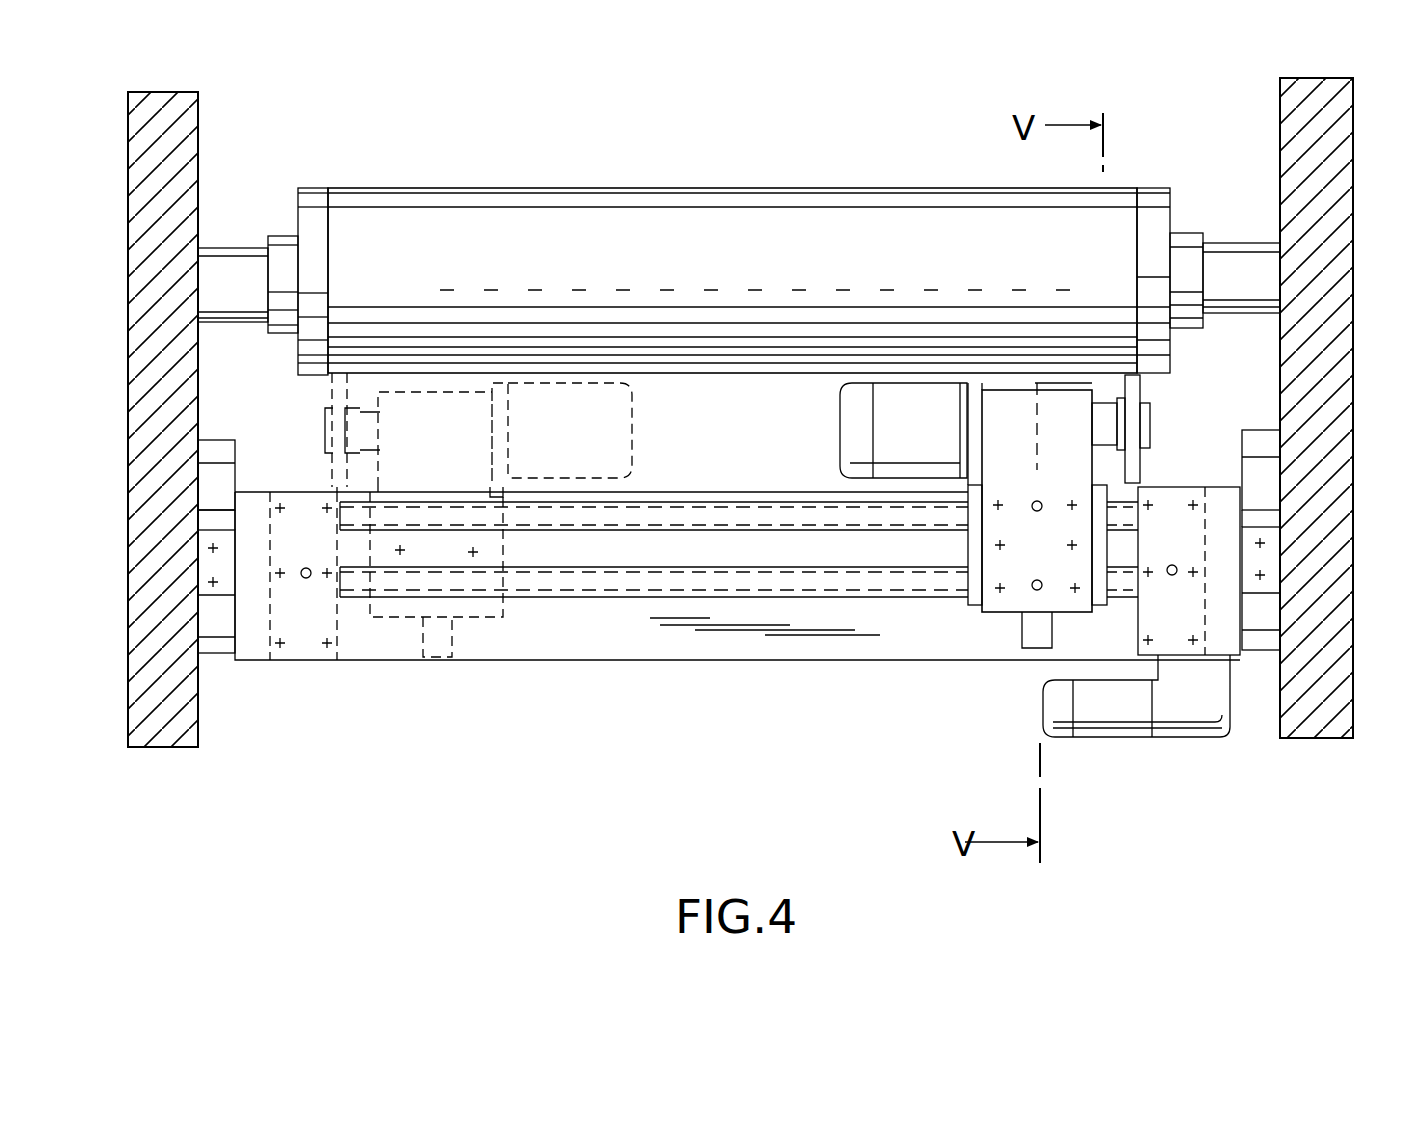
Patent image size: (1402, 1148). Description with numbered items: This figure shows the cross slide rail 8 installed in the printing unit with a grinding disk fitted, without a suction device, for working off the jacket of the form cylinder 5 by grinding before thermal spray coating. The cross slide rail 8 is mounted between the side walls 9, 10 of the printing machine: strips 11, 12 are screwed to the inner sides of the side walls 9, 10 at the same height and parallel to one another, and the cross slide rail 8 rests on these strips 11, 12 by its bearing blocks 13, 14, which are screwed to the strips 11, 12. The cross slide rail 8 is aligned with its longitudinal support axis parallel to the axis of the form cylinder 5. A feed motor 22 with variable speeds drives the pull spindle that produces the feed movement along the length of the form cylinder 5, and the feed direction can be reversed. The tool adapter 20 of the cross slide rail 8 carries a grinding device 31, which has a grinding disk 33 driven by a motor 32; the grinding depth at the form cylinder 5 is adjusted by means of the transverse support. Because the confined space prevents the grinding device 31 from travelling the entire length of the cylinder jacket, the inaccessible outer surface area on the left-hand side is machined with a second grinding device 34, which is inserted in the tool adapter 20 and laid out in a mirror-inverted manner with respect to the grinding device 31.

The form cylinder 5 is at (840, 200).
The cross slide rail 8 is at (612, 558).
The side wall 9 is at (165, 732).
The side wall 10 is at (1318, 727).
The strip 11 is at (205, 452).
The strip 12 is at (1270, 447).
The bearing block 13 is at (205, 592).
The bearing block 14 is at (1268, 541).
The tool adapter 20 is at (978, 607).
The feed motor 22 is at (1085, 725).
The grinding device 31 is at (897, 405).
The motor 32 is at (855, 432).
The grinding disk 33 is at (1135, 467).
The grinding device 34 is at (585, 430).